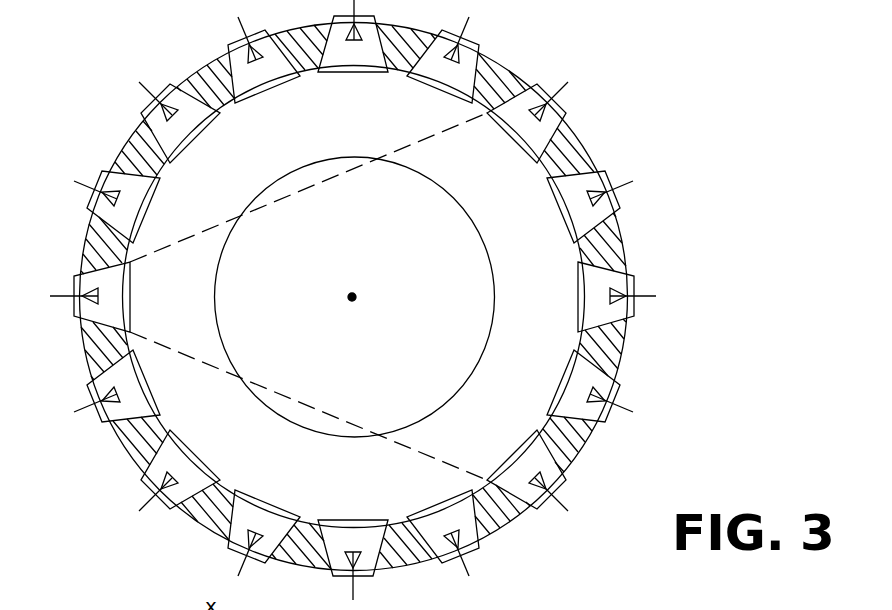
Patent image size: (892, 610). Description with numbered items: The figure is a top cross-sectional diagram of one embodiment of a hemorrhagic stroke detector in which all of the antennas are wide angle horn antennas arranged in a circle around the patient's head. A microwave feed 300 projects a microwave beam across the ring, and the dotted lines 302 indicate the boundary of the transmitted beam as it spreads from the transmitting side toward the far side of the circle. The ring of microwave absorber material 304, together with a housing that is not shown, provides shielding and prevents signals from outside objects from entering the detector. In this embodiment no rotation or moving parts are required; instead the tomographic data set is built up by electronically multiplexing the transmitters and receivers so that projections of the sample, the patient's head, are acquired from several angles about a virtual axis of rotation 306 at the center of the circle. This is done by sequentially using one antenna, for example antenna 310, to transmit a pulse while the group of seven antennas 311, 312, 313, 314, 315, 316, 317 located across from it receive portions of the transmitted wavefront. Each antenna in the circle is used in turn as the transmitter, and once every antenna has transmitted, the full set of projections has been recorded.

The microwave feed 300 is at (100, 296).
The dotted lines 302 is at (178, 242).
The microwave absorber material 304 is at (584, 143).
The virtual axis of rotation 306 is at (355, 295).
The antenna 310 is at (78, 317).
The antenna 311 is at (472, 48).
The antenna 312 is at (555, 107).
The antenna 313 is at (609, 179).
The antenna 314 is at (625, 288).
The antenna 315 is at (607, 391).
The antenna 316 is at (550, 481).
The antenna 317 is at (470, 547).